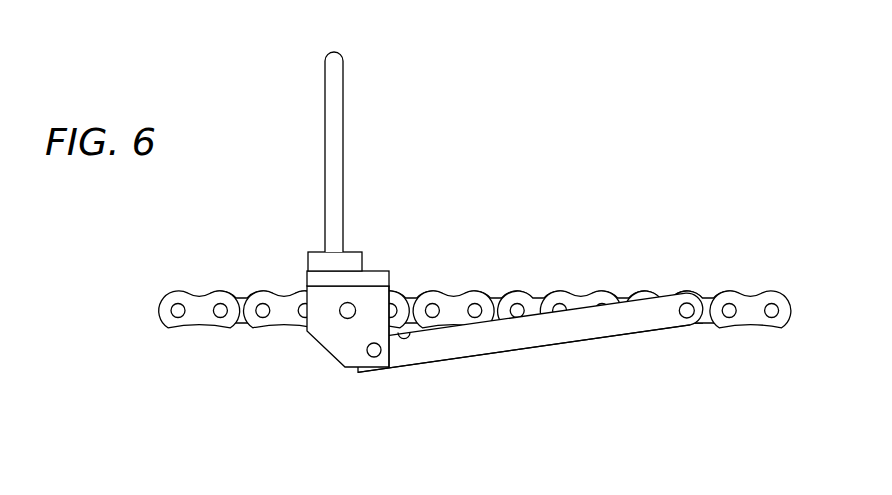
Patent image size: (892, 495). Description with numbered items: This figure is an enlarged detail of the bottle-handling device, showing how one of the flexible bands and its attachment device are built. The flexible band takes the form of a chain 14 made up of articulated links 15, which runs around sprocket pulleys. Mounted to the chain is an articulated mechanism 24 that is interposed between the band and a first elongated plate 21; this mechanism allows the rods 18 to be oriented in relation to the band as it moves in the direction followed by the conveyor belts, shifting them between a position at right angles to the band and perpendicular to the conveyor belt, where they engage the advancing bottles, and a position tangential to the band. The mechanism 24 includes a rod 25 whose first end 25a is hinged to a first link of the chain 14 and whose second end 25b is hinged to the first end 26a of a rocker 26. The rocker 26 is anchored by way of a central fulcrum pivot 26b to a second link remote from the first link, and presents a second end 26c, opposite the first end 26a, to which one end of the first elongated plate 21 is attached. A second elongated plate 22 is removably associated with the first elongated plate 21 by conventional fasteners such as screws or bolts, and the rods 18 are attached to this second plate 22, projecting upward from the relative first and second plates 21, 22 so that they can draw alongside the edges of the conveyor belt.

The chain 14 is at (475, 256).
The articulated links 15 is at (605, 288).
The rods 18 is at (322, 155).
The first elongated plate 21 is at (350, 265).
The second elongated plate 22 is at (307, 277).
The articulated mechanism 24 is at (554, 333).
The rod 25 is at (628, 342).
The first end 25a is at (693, 293).
The second end 25b is at (411, 351).
The rocker 26 is at (335, 338).
The first end 26a is at (376, 357).
The central fulcrum pivot 26b is at (347, 319).
The second end 26c is at (439, 289).